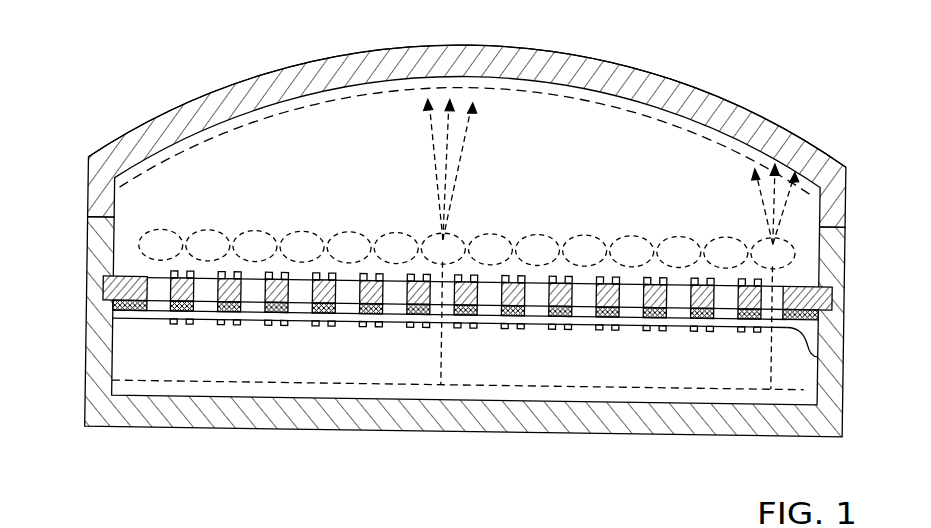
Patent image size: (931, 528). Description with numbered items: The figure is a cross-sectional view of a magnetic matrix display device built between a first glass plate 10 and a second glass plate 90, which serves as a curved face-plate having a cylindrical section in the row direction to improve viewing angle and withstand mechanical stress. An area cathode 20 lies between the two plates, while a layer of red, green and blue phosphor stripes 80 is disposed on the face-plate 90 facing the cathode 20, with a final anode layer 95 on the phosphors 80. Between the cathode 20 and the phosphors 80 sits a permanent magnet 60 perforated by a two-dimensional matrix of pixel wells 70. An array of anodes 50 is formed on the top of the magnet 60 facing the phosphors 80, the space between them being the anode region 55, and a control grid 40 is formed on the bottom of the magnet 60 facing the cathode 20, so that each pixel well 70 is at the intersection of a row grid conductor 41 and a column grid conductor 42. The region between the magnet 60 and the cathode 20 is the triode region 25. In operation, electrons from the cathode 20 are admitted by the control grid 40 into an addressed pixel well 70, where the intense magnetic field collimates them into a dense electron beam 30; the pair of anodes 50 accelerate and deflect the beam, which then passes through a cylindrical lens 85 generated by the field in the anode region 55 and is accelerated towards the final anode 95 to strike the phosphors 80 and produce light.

The first glass plate 10 is at (485, 432).
The area cathode 20 is at (263, 382).
The triode region 25 is at (620, 362).
The electron beam 30 is at (440, 272).
The control grid 40 is at (785, 325).
The row grid conductor 41 is at (113, 312).
The column grid conductor 42 is at (140, 303).
The anodes 50 is at (88, 252).
The anode region 55 is at (308, 185).
The permanent magnet 60 is at (103, 290).
The pixel wells 70 is at (160, 295).
The phosphor stripes 80 is at (270, 100).
The cylindrical lens 85 is at (584, 243).
The second glass plate 90 is at (685, 107).
The final anode layer 95 is at (147, 172).